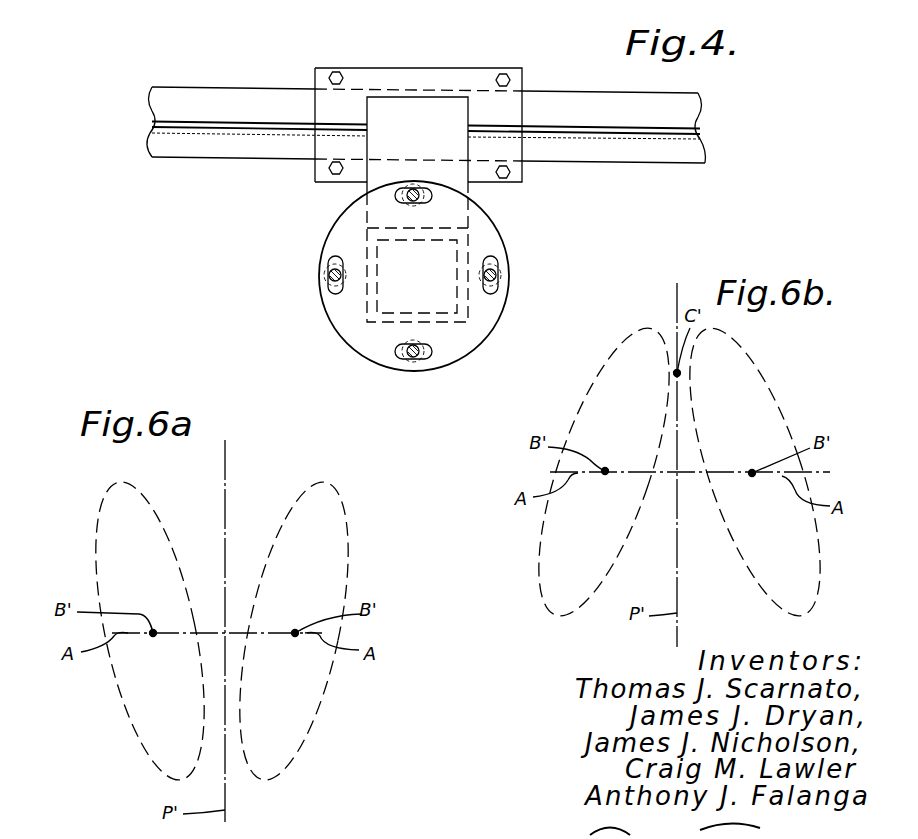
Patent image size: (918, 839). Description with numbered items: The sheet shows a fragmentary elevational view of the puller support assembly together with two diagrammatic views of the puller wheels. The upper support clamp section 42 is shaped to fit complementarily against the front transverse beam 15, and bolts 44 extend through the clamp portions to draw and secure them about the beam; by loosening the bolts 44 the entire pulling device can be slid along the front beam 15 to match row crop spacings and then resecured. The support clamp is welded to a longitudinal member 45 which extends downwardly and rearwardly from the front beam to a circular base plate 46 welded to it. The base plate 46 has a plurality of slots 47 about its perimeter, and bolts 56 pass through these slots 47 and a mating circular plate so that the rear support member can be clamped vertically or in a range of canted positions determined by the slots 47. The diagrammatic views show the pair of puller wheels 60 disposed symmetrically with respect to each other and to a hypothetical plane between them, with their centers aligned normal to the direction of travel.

In FIG. 4, the front transverse beam 15 is at (172, 90).
In FIG. 4, the upper support clamp section 42 is at (325, 145).
In FIG. 4, the bolts 44 is at (330, 73).
In FIG. 4, the longitudinal member 45 is at (430, 98).
In FIG. 4, the circular base plate 46 is at (468, 332).
In FIG. 4, the slots 47 is at (408, 190).
In FIG. 4, the bolts 56 is at (418, 190).
In FIG. 6a, the puller wheel 60 is at (100, 532).
In FIG. 6b, the puller wheel 60 is at (610, 378).